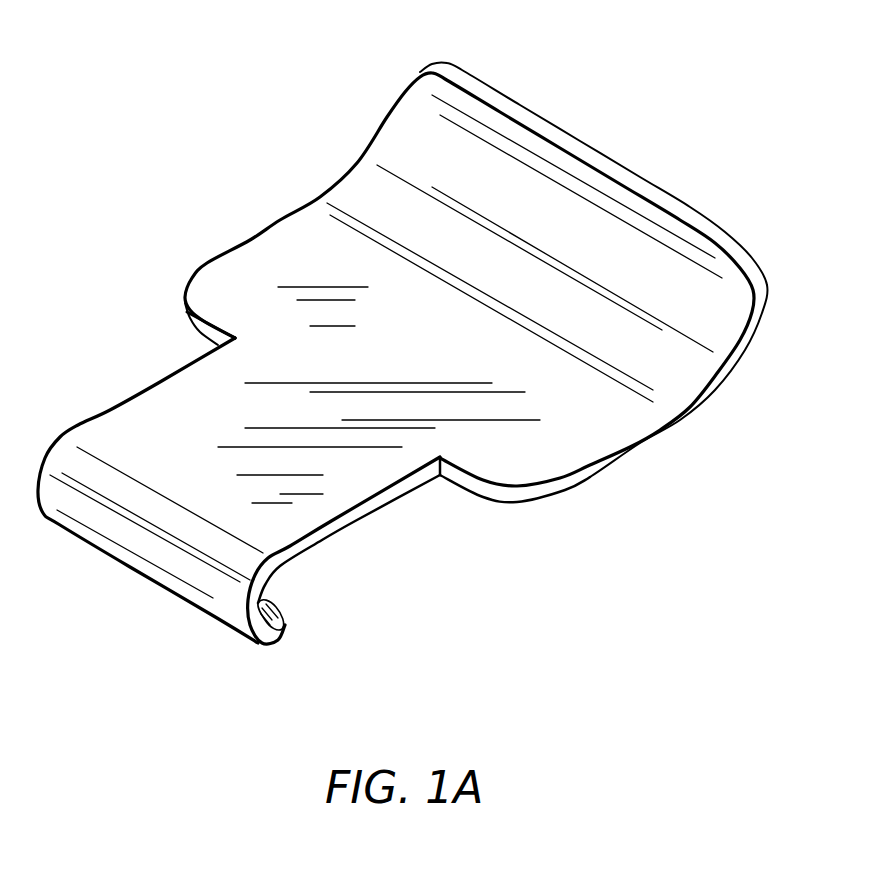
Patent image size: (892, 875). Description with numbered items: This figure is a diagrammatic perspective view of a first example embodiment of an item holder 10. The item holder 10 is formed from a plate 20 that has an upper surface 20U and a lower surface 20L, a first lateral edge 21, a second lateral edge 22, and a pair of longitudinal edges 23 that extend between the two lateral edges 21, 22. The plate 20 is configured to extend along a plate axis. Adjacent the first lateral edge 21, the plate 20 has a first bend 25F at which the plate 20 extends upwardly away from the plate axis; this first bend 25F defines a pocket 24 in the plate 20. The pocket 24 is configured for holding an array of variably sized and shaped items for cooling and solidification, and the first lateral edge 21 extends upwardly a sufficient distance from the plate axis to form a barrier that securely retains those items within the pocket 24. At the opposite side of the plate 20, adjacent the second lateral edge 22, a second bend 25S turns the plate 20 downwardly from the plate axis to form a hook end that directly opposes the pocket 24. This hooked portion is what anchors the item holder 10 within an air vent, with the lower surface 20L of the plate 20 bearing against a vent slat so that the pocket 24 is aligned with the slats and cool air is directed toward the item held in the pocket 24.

The item holder 10 is at (688, 103).
The plate 20 is at (622, 415).
The upper surface 20U is at (518, 461).
The lower surface 20L is at (585, 482).
The first lateral edge 21 is at (653, 176).
The second lateral edge 22 is at (277, 605).
The longitudinal edges 23 is at (260, 232).
The pocket 24 is at (697, 306).
The first bend 25F is at (712, 398).
The second bend 25S is at (233, 597).